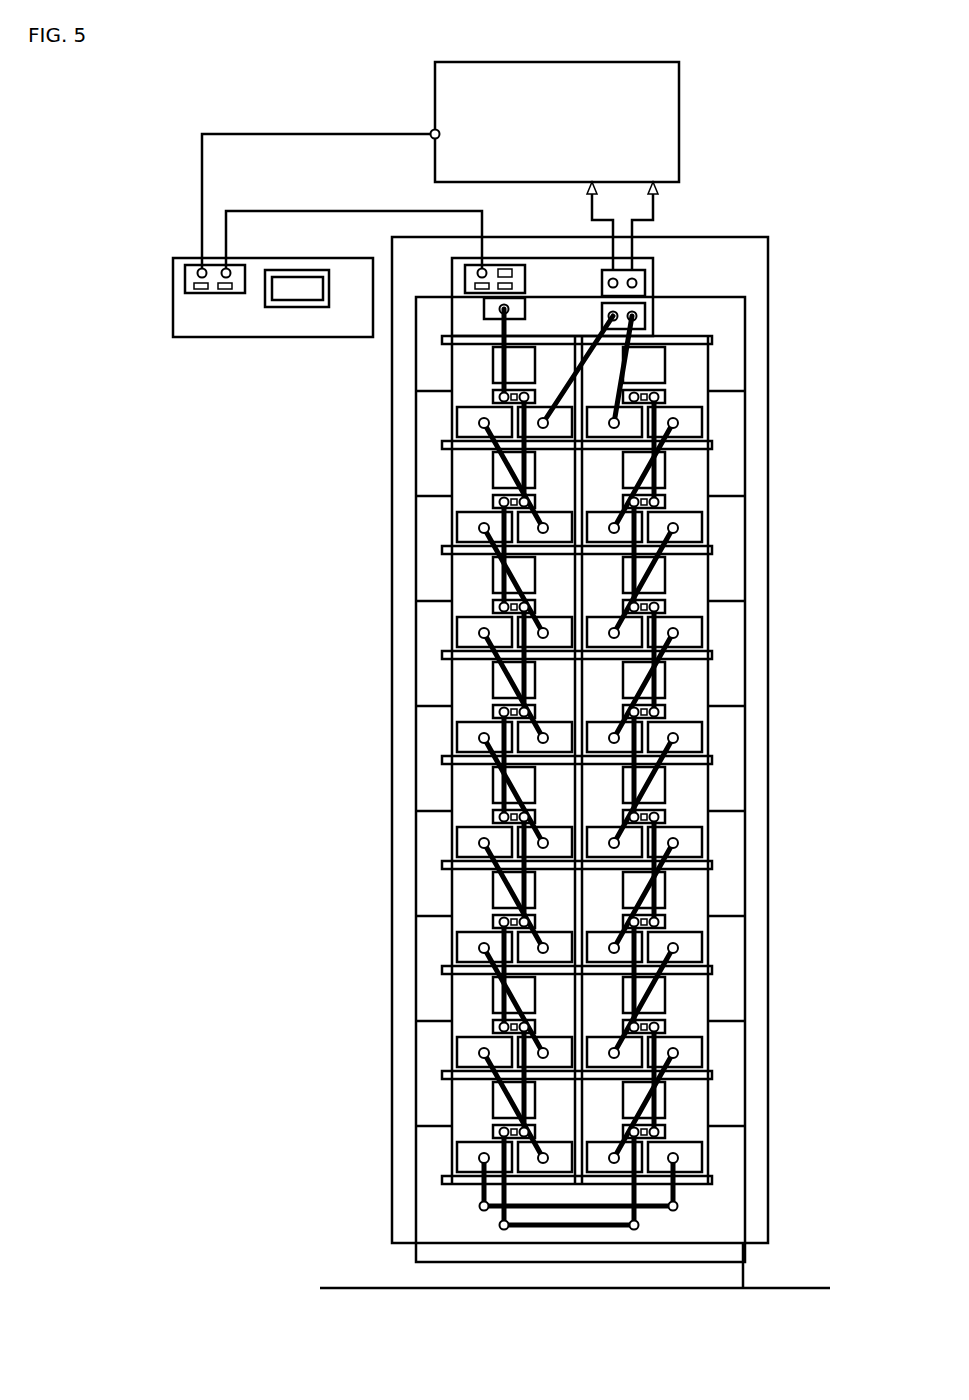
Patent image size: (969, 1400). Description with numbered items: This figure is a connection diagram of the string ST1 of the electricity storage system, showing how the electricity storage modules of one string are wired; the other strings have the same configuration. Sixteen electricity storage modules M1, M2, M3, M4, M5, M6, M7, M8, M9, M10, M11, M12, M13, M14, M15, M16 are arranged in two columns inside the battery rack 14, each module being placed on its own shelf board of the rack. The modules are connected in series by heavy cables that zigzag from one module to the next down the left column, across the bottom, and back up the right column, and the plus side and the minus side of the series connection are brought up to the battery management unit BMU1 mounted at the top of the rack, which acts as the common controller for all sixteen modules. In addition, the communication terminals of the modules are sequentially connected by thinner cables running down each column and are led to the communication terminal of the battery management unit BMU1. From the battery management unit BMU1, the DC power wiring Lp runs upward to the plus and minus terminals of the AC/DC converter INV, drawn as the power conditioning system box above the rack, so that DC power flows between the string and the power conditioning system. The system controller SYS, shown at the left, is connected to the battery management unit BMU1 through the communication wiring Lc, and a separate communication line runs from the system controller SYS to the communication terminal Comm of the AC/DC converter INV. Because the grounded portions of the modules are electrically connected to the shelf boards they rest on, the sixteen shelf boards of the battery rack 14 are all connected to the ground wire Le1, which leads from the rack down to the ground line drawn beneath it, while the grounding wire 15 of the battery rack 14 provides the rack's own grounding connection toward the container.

The AC/DC converter INV is at (645, 60).
The communication terminal Comm is at (358, 198).
The communication wiring Lc is at (298, 208).
The DC power wiring Lp is at (597, 213).
The battery rack 14 is at (757, 235).
The grounding wire 15 is at (416, 1256).
The battery management unit BMU1 is at (655, 297).
The system controller SYS is at (173, 318).
The electricity storage module M1 is at (449, 392).
The electricity storage module M2 is at (449, 497).
The electricity storage module M3 is at (449, 602).
The electricity storage module M4 is at (449, 707).
The electricity storage module M5 is at (449, 812).
The electricity storage module M6 is at (449, 917).
The electricity storage module M7 is at (449, 1022).
The electricity storage module M8 is at (449, 1127).
The electricity storage module M9 is at (710, 1127).
The electricity storage module M10 is at (717, 1022).
The electricity storage module M11 is at (717, 917).
The electricity storage module M12 is at (717, 812).
The electricity storage module M13 is at (717, 707).
The electricity storage module M14 is at (717, 602).
The electricity storage module M15 is at (717, 497).
The electricity storage module M16 is at (717, 392).
The string ST1 is at (657, 1215).
The ground wire Le1 is at (725, 1290).